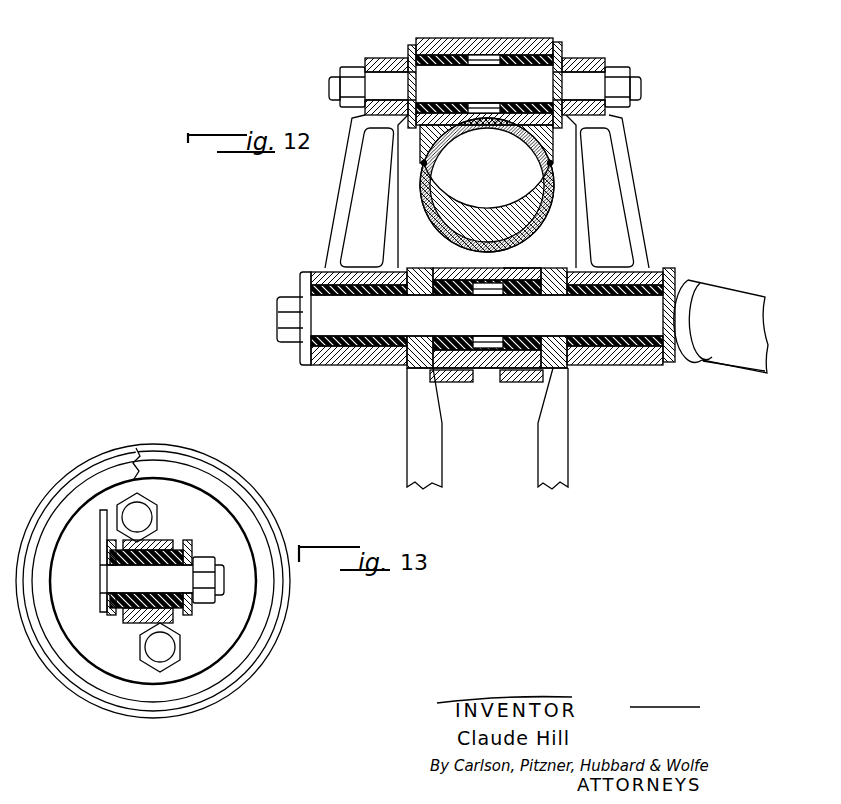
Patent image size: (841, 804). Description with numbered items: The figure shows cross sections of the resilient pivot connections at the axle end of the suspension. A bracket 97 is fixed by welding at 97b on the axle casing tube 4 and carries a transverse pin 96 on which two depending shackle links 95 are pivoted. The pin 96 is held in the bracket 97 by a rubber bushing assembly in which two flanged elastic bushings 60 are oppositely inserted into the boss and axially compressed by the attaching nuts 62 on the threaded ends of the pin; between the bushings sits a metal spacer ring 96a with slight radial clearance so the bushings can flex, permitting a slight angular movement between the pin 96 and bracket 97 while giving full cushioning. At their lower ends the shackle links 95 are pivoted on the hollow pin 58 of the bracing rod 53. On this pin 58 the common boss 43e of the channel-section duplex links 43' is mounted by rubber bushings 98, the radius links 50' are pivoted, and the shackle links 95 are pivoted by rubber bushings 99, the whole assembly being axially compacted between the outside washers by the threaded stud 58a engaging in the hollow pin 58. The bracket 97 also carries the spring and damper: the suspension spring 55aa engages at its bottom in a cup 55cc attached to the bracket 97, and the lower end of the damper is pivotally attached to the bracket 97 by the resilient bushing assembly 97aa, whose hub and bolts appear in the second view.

In FIG. 12, the flanged elastic bushings 60 is at (434, 48).
In FIG. 12, the bracket 97 is at (447, 40).
In FIG. 12, the metal spacer ring 96a is at (488, 55).
In FIG. 12, the transverse pin 96 is at (534, 62).
In FIG. 12, the attaching nuts 62 is at (352, 66).
In FIG. 12, the shackle links 95 is at (342, 188).
In FIG. 12, the weld 97b is at (423, 165).
In FIG. 12, the axle casing tube 4 is at (433, 221).
In FIG. 12, the rubber bushings 98 is at (430, 268).
In FIG. 12, the common boss 43e is at (515, 268).
In FIG. 12, the bracing rod 53 is at (737, 288).
In FIG. 12, the threaded stud 58a is at (290, 341).
In FIG. 12, the rubber bushings 99 is at (368, 356).
In FIG. 12, the hollow pin 58 is at (654, 328).
In FIG. 12, the duplex links 43' is at (487, 387).
In FIG. 12, the radius links 50' is at (492, 428).
In FIG. 13, the resilient bushing assembly 97aa is at (170, 536).
In FIG. 13, the spring 55aa is at (270, 588).
In FIG. 13, the cup 55cc is at (287, 612).